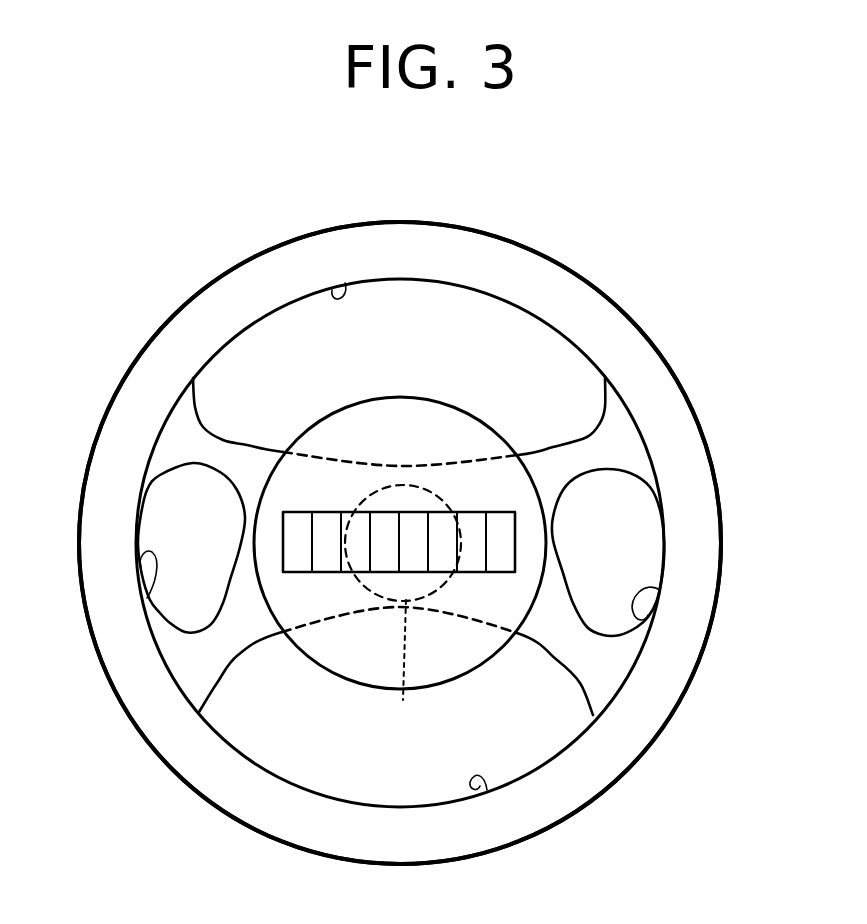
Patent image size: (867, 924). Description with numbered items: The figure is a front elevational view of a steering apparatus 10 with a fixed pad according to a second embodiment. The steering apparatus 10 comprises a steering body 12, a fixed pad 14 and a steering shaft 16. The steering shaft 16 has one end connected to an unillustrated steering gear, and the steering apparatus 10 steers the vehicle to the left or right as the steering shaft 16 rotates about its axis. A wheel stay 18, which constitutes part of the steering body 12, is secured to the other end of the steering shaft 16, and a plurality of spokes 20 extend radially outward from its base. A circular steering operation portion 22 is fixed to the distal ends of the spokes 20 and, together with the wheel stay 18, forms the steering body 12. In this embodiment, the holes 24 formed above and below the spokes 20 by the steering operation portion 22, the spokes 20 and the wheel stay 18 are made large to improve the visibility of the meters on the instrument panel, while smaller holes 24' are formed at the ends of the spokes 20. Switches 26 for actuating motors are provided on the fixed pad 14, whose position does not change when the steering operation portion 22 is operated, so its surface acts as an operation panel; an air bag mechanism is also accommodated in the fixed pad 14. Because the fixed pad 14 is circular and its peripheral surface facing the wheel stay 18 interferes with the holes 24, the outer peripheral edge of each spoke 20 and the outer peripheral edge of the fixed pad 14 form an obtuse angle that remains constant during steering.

The steering apparatus 10 is at (168, 241).
The steering body 12 is at (546, 259).
The fixed pad 14 is at (460, 396).
The steering shaft 16 is at (443, 580).
The wheel stay 18 is at (403, 700).
The spokes 20 is at (223, 448).
The steering operation portion 22 is at (623, 330).
The holes 24 is at (434, 536).
The smaller holes 24' is at (415, 634).
The switches 26 is at (505, 513).